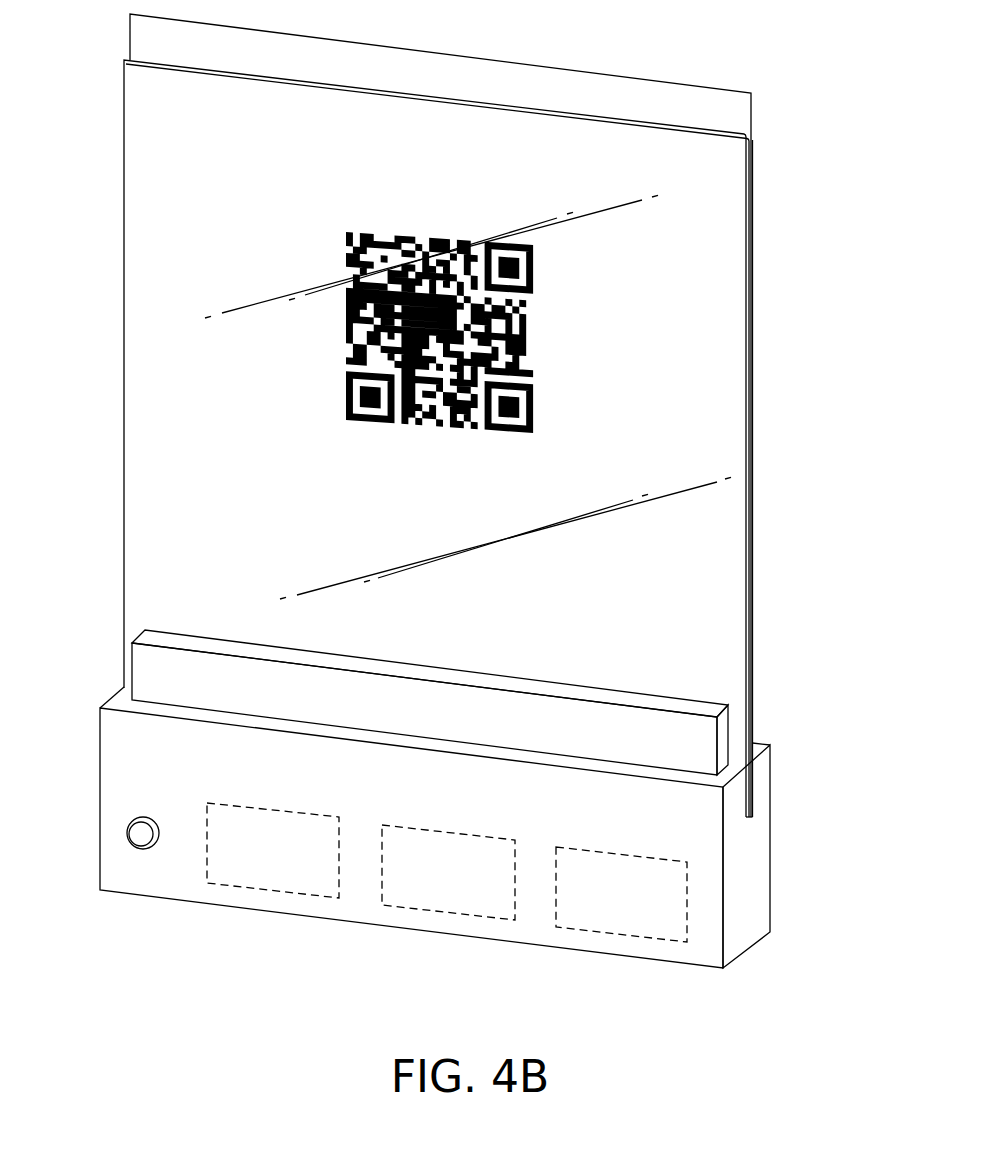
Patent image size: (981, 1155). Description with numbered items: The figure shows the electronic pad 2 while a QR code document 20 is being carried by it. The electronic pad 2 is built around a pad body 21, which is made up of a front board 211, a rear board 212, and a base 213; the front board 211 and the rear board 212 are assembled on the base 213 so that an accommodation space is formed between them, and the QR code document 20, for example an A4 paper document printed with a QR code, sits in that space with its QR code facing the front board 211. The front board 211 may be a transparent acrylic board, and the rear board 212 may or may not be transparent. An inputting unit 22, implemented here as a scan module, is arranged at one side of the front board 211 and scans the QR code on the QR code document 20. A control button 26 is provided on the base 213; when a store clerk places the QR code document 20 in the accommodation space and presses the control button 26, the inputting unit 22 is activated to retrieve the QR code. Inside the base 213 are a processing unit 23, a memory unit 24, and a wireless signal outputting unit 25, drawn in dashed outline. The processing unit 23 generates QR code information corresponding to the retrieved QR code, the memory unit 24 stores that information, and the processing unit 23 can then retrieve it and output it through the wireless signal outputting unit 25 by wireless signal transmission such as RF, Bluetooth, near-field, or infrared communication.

The electronic pad 2 is at (120, 552).
The QR code document 20 is at (670, 105).
The pad body 21 is at (853, 617).
The front board 211 is at (722, 673).
The rear board 212 is at (755, 707).
The base 213 is at (762, 790).
The inputting unit 22 is at (148, 670).
The processing unit 23 is at (620, 922).
The memory unit 24 is at (437, 903).
The wireless signal outputting unit 25 is at (295, 885).
The control button 26 is at (140, 835).